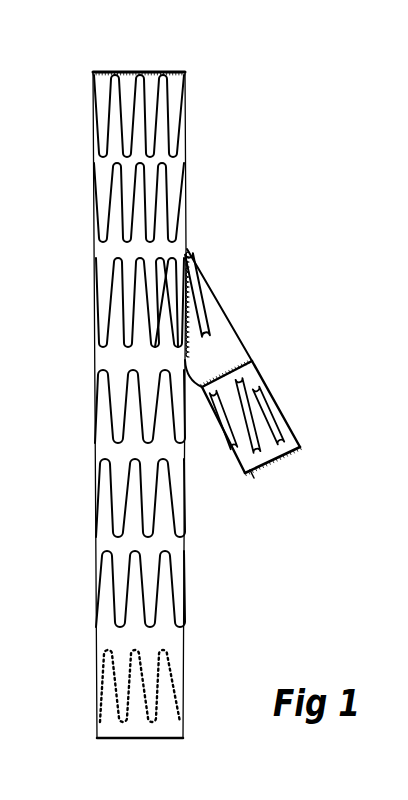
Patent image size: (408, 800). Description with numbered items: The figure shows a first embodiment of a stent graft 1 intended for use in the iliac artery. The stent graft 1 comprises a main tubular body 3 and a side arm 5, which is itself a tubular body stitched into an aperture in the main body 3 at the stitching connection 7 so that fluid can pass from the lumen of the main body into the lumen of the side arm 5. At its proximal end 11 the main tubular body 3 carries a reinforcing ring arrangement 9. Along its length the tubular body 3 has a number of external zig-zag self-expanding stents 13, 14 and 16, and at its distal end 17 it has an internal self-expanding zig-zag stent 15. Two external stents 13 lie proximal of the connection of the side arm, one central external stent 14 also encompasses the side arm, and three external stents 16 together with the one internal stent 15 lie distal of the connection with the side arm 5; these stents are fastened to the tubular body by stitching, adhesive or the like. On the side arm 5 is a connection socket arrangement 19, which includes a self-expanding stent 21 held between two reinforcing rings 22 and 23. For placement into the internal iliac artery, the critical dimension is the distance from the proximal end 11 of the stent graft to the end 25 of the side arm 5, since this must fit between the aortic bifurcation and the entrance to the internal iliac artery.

The stent graft 1 is at (265, 172).
The tubular body 3 is at (130, 353).
The side arm 5 is at (220, 340).
The stitching connection 7 is at (190, 262).
The reinforcing ring arrangement 9 is at (168, 72).
The proximal end 11 is at (156, 65).
The external zig-zag self-expanding stent 13 is at (168, 118).
The central external stent 14 is at (135, 313).
The internal self-expanding zig-zag stent 15 is at (155, 702).
The external zig-zag self-expanding stent 16 is at (117, 500).
The distal end 17 is at (148, 743).
The connection socket arrangement 19 is at (312, 385).
The self-expanding stent 21 is at (263, 413).
The reinforcing ring 22 is at (295, 453).
The reinforcing ring 23 is at (250, 362).
The end of the side arm 25 is at (255, 480).